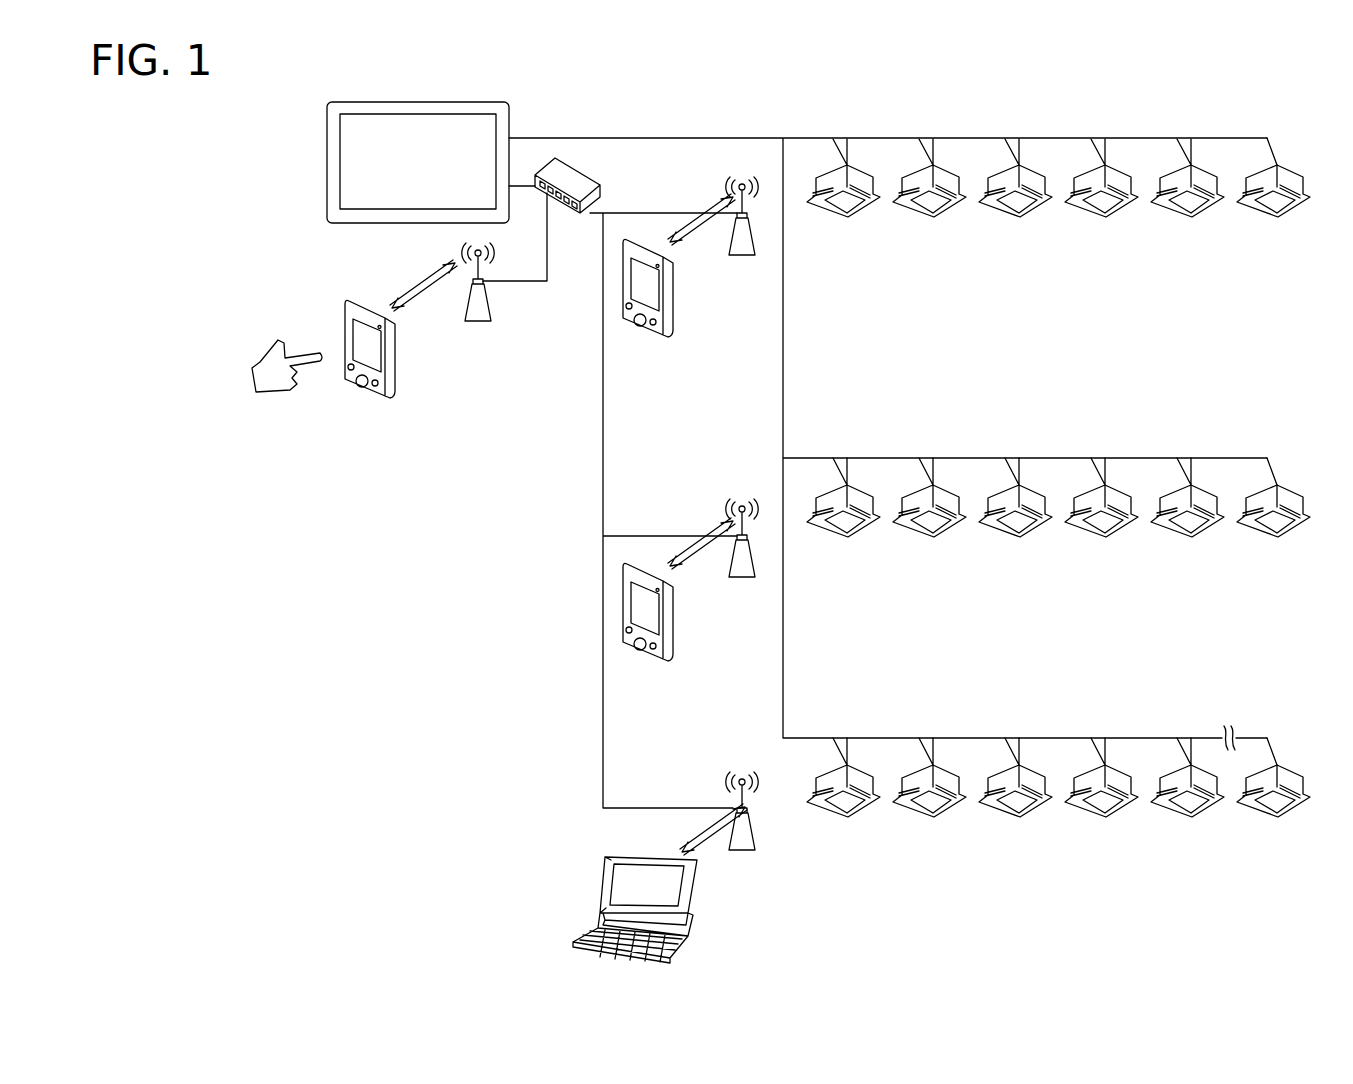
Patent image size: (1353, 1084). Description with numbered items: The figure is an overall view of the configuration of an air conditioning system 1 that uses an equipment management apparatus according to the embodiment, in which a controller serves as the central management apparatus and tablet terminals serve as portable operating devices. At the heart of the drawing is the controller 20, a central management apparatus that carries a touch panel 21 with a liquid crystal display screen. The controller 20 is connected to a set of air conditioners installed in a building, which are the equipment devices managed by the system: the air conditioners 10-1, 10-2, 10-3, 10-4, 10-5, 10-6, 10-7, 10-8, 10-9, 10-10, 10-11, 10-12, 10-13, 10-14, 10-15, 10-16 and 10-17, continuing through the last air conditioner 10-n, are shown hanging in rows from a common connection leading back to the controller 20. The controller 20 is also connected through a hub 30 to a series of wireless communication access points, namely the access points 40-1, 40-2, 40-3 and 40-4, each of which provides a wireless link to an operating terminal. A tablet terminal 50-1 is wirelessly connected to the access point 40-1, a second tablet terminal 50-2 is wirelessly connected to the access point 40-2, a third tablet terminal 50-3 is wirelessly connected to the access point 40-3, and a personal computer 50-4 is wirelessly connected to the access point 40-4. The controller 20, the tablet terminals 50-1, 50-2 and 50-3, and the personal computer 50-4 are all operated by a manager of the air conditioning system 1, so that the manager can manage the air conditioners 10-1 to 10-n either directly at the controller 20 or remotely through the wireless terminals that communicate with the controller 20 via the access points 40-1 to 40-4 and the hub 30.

The air conditioning system 1 is at (645, 102).
The controller 20 is at (377, 136).
The touch panel 21 is at (340, 146).
The hub 30 is at (570, 165).
The access point 40-1 is at (470, 323).
The access point 40-2 is at (740, 257).
The access point 40-3 is at (740, 579).
The access point 40-4 is at (740, 850).
The tablet terminal 50-1 is at (357, 401).
The tablet terminal 50-2 is at (640, 339).
The tablet terminal 50-3 is at (640, 663).
The personal computer 50-4 is at (683, 946).
The air conditioner 10-1 is at (838, 206).
The air conditioner 10-2 is at (924, 206).
The air conditioner 10-3 is at (1010, 206).
The air conditioner 10-4 is at (1096, 206).
The air conditioner 10-5 is at (1182, 206).
The air conditioner 10-6 is at (1268, 205).
The air conditioner 10-7 is at (838, 525).
The air conditioner 10-8 is at (924, 525).
The air conditioner 10-9 is at (1010, 525).
The air conditioner 10-10 is at (1093, 525).
The air conditioner 10-11 is at (1179, 525).
The air conditioner 10-12 is at (1265, 525).
The air conditioner 10-13 is at (835, 805).
The air conditioner 10-14 is at (921, 805).
The air conditioner 10-15 is at (1007, 805).
The air conditioner 10-16 is at (1093, 805).
The air conditioner 10-17 is at (1179, 805).
The air conditioner 10-n is at (1268, 805).